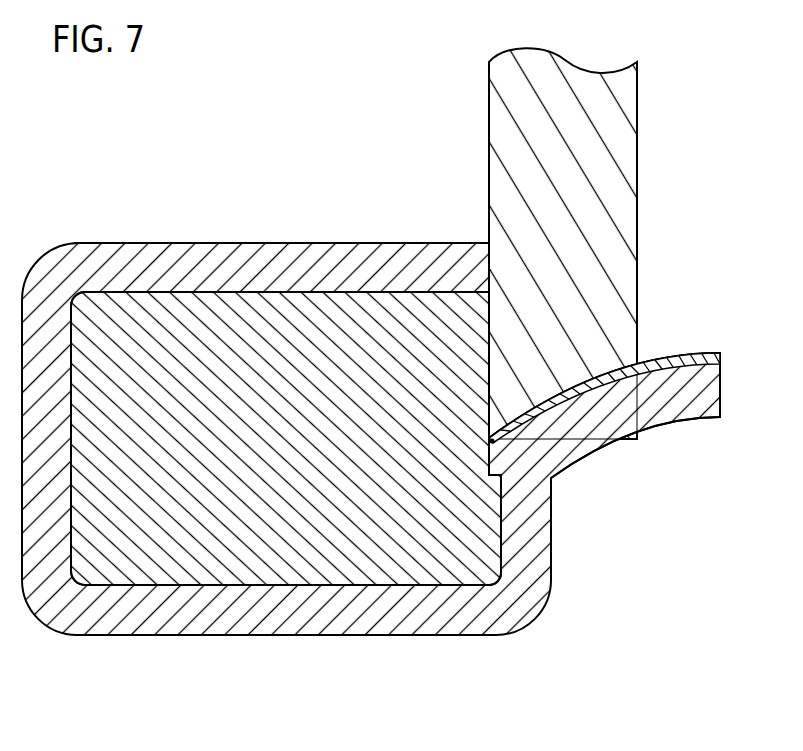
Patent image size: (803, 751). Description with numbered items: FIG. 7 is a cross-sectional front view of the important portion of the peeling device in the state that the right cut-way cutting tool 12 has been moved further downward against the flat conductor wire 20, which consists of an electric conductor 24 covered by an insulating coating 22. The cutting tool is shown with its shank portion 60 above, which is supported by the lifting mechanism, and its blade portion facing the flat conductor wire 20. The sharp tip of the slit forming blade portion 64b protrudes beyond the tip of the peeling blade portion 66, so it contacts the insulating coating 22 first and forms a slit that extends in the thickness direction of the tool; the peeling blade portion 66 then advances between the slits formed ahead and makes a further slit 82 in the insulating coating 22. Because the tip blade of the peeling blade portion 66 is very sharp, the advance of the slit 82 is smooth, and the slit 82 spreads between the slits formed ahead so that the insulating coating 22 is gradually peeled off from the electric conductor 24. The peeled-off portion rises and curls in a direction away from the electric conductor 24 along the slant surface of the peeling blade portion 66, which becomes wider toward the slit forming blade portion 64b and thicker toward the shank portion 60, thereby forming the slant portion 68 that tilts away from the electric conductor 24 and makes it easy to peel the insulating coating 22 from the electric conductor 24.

The right cut-way cutting tool 12 is at (587, 243).
The flat conductor wire 20 is at (371, 398).
The insulating coating 22 is at (296, 243).
The electric conductor 24 is at (201, 338).
The shank portion 60 is at (605, 112).
The slit forming blade portion 64b is at (633, 440).
The peeling blade portion 66 is at (500, 443).
The slant portion 68 is at (581, 402).
The slit 82 is at (492, 440).